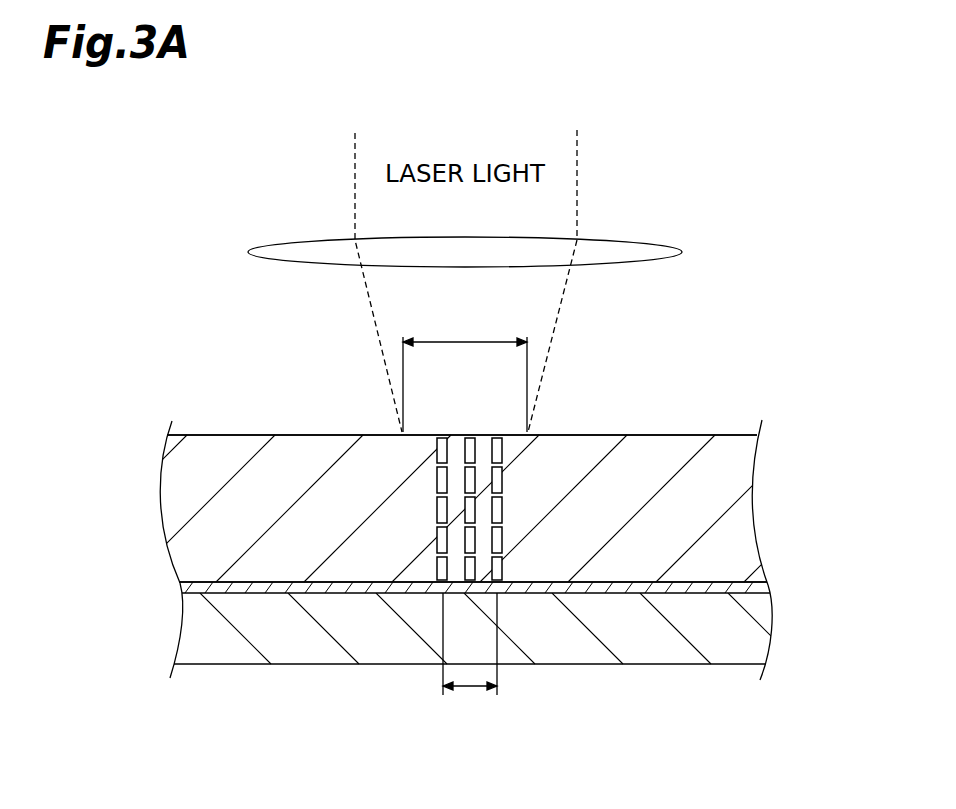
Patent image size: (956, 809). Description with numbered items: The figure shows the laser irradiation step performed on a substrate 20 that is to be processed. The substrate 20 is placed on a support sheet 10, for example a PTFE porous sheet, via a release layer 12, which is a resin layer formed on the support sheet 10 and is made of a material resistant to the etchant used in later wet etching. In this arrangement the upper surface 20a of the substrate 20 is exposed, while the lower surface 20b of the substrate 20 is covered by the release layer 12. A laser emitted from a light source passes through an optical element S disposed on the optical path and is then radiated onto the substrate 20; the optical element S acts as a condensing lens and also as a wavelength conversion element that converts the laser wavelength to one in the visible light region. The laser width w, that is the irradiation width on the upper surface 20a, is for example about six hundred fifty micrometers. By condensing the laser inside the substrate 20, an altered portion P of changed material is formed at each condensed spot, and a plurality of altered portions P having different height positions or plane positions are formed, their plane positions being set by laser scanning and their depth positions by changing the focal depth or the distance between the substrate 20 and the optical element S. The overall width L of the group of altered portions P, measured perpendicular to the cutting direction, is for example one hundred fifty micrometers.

The optical element S is at (637, 243).
The altered portion P is at (480, 488).
The substrate 20 is at (740, 470).
The upper surface 20a is at (682, 435).
The lower surface 20b is at (690, 594).
The release layer 12 is at (763, 590).
The support sheet 10 is at (760, 623).
The laser width w is at (465, 372).
The overall width L is at (470, 658).